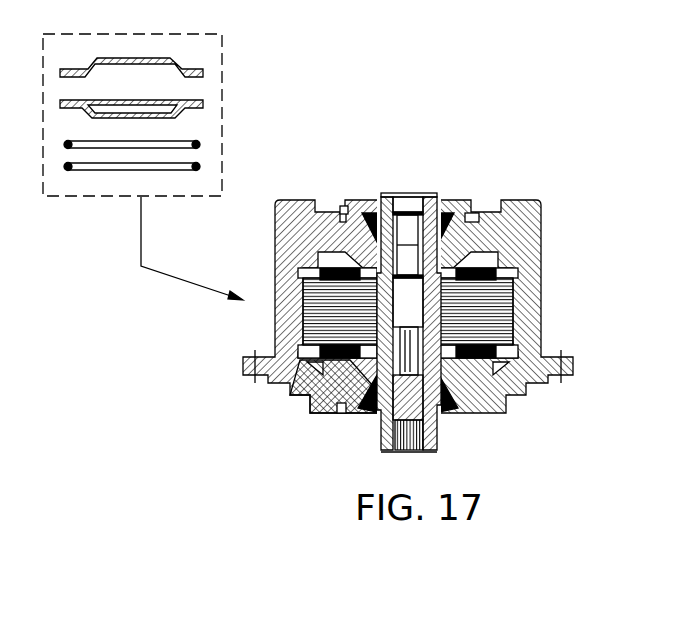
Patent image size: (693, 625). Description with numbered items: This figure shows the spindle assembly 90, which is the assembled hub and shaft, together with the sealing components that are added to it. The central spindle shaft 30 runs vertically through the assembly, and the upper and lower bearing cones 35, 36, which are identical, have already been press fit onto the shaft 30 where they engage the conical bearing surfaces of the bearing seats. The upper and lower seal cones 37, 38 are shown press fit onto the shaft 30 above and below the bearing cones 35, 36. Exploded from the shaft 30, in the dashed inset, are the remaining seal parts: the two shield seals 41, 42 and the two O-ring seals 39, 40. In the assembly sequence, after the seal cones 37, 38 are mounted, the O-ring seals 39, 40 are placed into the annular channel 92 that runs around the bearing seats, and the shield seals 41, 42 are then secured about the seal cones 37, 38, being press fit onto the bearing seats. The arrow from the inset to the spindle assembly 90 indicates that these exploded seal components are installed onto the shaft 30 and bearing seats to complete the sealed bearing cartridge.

The spindle shaft 30 is at (382, 435).
The upper bearing cone 35 is at (466, 208).
The lower bearing cone 36 is at (363, 418).
The upper seal cone 37 is at (443, 205).
The lower seal cone 38 is at (442, 410).
The seal O-ring 39 is at (200, 144).
The seal O-ring 40 is at (200, 167).
The shield seal 41 is at (200, 72).
The shield seal 42 is at (200, 105).
The spindle assembly 90 is at (560, 266).
The annular channel 92 is at (343, 210).